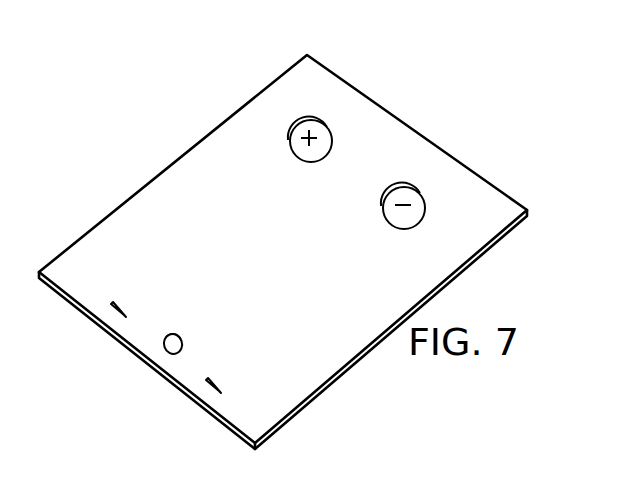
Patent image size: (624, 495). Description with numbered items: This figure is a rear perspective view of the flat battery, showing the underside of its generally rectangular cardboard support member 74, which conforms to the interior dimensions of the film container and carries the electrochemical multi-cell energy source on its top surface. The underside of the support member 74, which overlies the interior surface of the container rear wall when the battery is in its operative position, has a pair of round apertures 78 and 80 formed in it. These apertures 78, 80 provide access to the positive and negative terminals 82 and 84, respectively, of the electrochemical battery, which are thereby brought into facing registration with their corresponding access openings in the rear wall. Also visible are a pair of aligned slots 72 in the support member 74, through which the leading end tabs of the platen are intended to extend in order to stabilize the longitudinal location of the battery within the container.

The slots 72 is at (178, 333).
The support member 74 is at (97, 242).
The round aperture 78 is at (297, 128).
The round aperture 80 is at (392, 192).
The positive terminal 82 is at (320, 130).
The negative terminal 84 is at (405, 215).